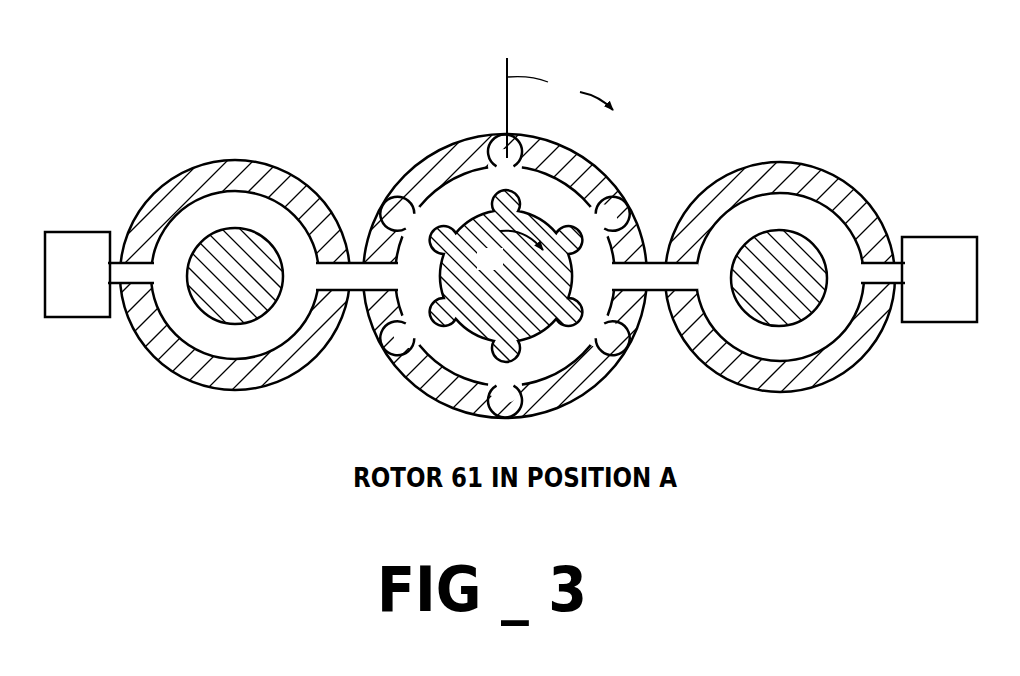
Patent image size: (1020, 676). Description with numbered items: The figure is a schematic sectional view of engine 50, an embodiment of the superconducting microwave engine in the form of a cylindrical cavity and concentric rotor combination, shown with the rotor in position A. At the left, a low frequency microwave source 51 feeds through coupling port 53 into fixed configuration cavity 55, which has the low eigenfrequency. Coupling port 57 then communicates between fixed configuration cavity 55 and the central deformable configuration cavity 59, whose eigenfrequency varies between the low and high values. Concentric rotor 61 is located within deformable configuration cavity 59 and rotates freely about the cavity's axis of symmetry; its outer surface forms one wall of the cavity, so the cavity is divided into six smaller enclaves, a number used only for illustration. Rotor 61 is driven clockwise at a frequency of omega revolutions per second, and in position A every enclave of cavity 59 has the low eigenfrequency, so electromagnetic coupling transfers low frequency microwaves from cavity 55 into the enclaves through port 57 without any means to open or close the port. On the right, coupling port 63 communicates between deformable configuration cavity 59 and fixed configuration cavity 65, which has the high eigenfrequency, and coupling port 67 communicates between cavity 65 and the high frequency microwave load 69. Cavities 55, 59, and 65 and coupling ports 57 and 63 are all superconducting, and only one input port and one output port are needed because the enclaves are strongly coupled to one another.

The engine 50 is at (690, 98).
The low frequency microwave source 51 is at (62, 286).
The coupling port 53 is at (118, 285).
The fixed configuration cavity 55 is at (205, 208).
The coupling port 57 is at (360, 278).
The deformable configuration cavity 59 is at (458, 193).
The concentric rotor 61 is at (545, 215).
The coupling port 63 is at (658, 280).
The fixed configuration cavity 65 is at (800, 218).
The coupling port 67 is at (898, 285).
The high frequency microwave load 69 is at (923, 291).